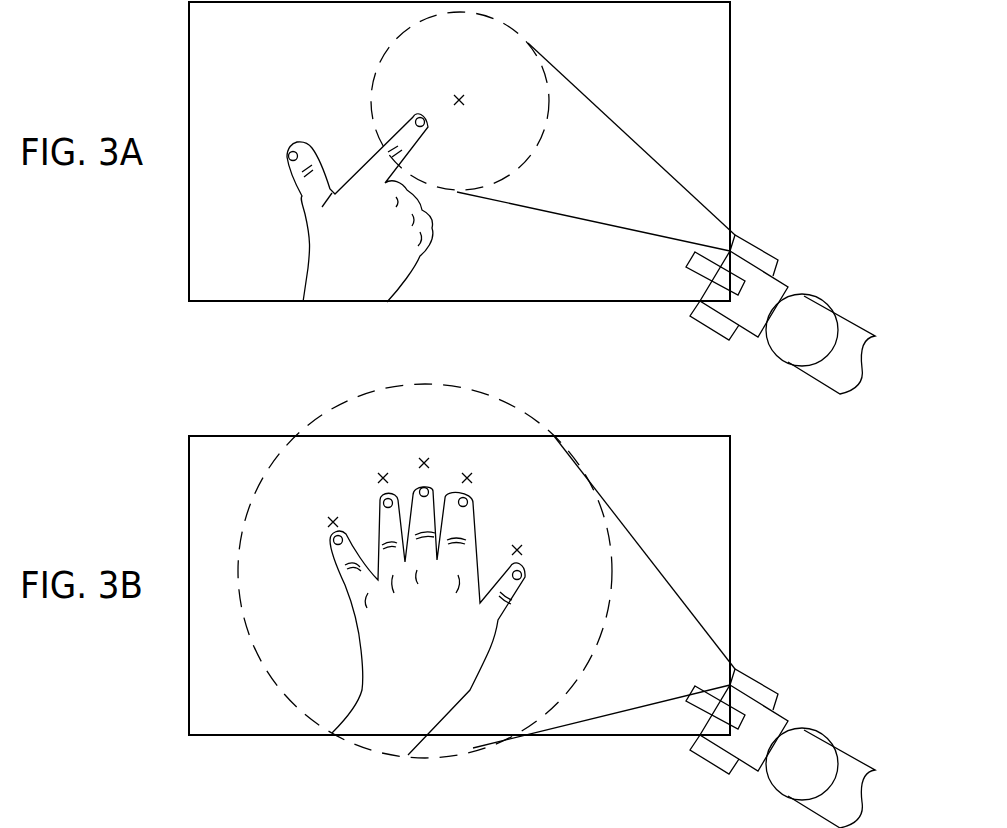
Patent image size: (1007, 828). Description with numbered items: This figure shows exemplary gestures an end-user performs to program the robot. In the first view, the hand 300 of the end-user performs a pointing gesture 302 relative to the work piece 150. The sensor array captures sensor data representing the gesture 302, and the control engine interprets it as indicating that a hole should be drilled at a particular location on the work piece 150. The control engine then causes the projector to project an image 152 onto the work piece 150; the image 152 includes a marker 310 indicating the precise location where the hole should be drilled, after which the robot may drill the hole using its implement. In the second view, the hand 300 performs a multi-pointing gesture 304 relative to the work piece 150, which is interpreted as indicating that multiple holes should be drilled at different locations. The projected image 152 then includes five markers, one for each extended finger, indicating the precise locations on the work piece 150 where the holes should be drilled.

In FIG. 3A, the work piece 150 is at (714, 37).
In FIG. 3B, the work piece 150 is at (714, 472).
In FIG. 3A, the image 152 is at (529, 43).
In FIG. 3B, the image 152 is at (583, 471).
In FIG. 3A, the hand 300 is at (302, 198).
In FIG. 3B, the hand 300 is at (362, 640).
In FIG. 3A, the pointing gesture 302 is at (446, 238).
In FIG. 3B, the multi-pointing gesture 304 is at (497, 660).
In FIG. 3A, the marker 310 is at (466, 100).